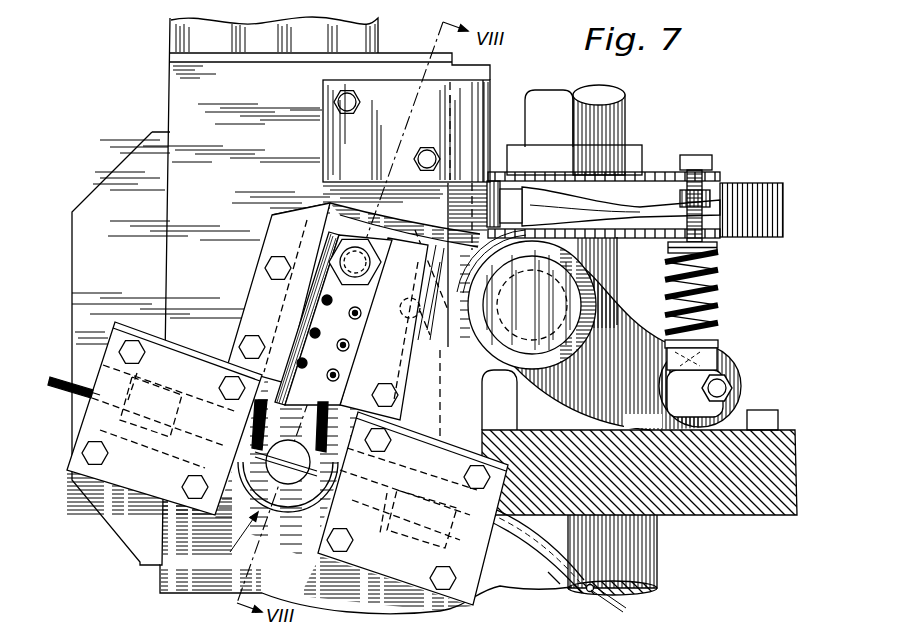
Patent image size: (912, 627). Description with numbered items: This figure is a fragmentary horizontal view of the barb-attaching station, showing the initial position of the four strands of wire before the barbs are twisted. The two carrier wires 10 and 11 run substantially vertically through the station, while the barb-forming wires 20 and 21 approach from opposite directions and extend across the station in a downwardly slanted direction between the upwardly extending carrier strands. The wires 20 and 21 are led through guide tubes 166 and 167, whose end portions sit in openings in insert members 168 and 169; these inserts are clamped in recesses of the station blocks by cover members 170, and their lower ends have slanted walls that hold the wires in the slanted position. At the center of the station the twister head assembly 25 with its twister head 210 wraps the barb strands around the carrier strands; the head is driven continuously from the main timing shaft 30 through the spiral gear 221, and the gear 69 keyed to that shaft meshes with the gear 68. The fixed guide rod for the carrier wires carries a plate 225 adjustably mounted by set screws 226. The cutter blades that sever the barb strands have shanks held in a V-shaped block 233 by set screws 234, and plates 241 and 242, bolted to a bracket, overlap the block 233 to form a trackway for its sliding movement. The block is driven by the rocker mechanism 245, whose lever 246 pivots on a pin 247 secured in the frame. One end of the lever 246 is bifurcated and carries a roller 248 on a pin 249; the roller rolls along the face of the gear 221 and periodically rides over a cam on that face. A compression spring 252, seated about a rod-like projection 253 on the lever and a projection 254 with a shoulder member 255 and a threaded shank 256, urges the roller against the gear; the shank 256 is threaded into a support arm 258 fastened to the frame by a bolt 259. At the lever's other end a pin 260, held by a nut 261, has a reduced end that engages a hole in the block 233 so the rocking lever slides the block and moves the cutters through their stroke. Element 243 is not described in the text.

The carrier wire 10 is at (288, 484).
The carrier wire 11 is at (292, 434).
The barb-forming wire 20 is at (60, 377).
The barb-forming wire 21 is at (612, 600).
The twister head assembly 25 is at (234, 543).
The main timing shaft 30 is at (625, 107).
The gear 68 is at (772, 187).
The gear 69 is at (527, 176).
The guide tube 166 is at (82, 385).
The guide tube 167 is at (553, 580).
The insert member 168 is at (252, 433).
The insert member 169 is at (347, 472).
The cover member 170 is at (168, 352).
The twister head 210 is at (280, 480).
The spiral gear 221 is at (728, 515).
The plate 225 is at (248, 397).
The set screw 226 is at (390, 442).
The V-shaped block 233 is at (331, 202).
The set screw 234 is at (361, 318).
The plate 241 is at (255, 290).
The plate 242 is at (420, 363).
The block 243 is at (430, 236).
The rocker mechanism 245 is at (633, 327).
The lever 246 is at (673, 400).
The pin 247 is at (545, 275).
The roller 248 is at (735, 350).
The pin 249 is at (735, 380).
The spring 252 is at (718, 293).
The rod-like projection 253 is at (718, 322).
The projection 254 is at (718, 268).
The shoulder member 255 is at (717, 250).
The threaded shank 256 is at (712, 175).
The support arm 258 is at (640, 165).
The bolt 259 is at (524, 200).
The pin 260 is at (343, 243).
The nut 261 is at (348, 256).